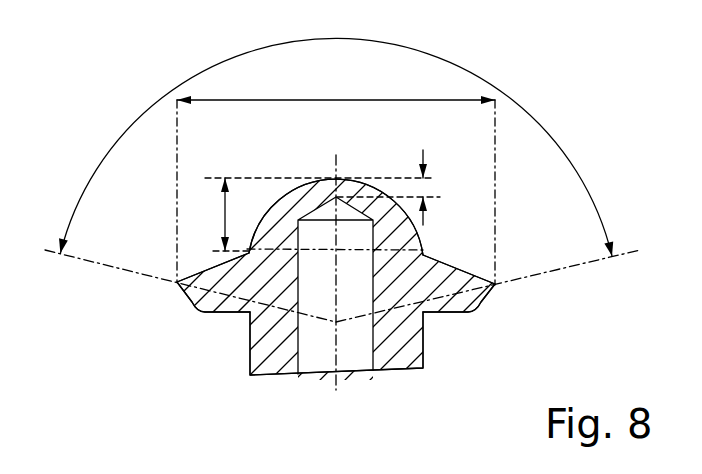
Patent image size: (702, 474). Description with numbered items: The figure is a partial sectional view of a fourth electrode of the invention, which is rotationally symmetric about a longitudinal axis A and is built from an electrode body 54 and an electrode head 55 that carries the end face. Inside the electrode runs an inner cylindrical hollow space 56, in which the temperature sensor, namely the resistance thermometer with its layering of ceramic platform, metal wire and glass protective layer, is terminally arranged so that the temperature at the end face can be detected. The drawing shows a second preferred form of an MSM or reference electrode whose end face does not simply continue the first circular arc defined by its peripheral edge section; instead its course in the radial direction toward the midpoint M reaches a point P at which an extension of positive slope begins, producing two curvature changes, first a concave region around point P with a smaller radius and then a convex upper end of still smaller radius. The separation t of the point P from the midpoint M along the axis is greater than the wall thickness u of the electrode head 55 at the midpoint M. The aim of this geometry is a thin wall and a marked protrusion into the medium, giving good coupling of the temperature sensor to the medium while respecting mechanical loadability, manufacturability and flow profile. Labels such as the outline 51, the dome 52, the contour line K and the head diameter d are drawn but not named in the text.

The fastening element (rivet body) 51 is at (230, 370).
The domed head surface 52 is at (421, 218).
The electrode body 54 is at (407, 353).
The electrode head 55 is at (246, 252).
The inner cylindrical hollow space 56 is at (359, 358).
The longitudinal axis A is at (334, 381).
The contour line K is at (425, 250).
The midpoint M is at (333, 172).
The point P is at (249, 250).
The flange diameter d is at (336, 177).
The separation t is at (318, 214).
The wall thickness u is at (393, 187).